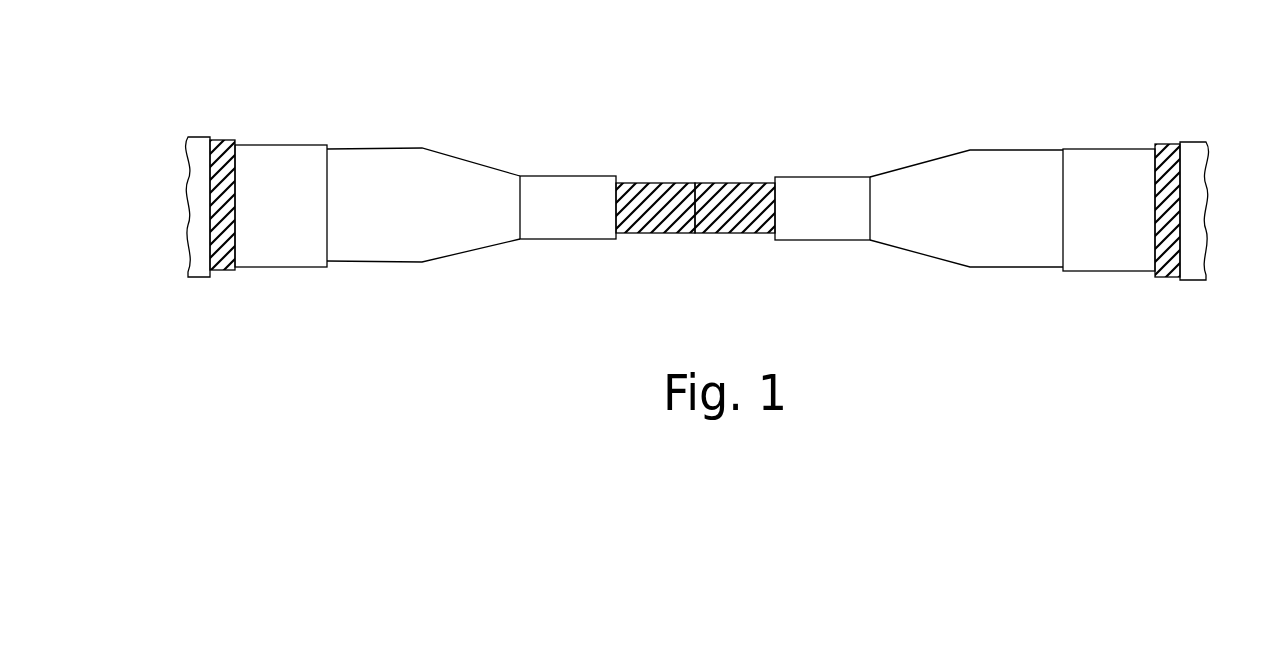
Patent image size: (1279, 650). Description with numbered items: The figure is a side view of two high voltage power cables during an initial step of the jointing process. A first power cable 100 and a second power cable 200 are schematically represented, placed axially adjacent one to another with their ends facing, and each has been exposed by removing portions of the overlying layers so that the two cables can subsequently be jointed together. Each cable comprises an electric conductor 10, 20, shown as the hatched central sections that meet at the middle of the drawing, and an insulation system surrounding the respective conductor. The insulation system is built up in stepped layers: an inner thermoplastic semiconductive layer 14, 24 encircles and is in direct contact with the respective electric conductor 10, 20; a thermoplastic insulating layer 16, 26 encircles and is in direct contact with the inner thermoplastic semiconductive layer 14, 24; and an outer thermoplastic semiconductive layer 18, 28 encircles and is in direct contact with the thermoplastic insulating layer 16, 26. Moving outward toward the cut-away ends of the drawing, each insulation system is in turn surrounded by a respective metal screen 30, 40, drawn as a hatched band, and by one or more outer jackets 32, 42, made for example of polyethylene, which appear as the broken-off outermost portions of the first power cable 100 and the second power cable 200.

The electric conductor 10 is at (650, 183).
The inner thermoplastic semiconductive layer 14 is at (558, 176).
The thermoplastic insulating layer 16 is at (373, 261).
The outer thermoplastic semiconductive layer 18 is at (277, 267).
The electric conductor 20 is at (733, 183).
The inner thermoplastic semiconductive layer 24 is at (825, 177).
The thermoplastic insulating layer 26 is at (1023, 267).
The outer thermoplastic semiconductive layer 28 is at (1115, 271).
The metal screen 30 is at (223, 137).
The outer jacket 32 is at (188, 193).
The metal screen 40 is at (1167, 144).
The outer jacket 42 is at (1195, 217).
The first power cable 100 is at (445, 127).
The second power cable 200 is at (982, 127).